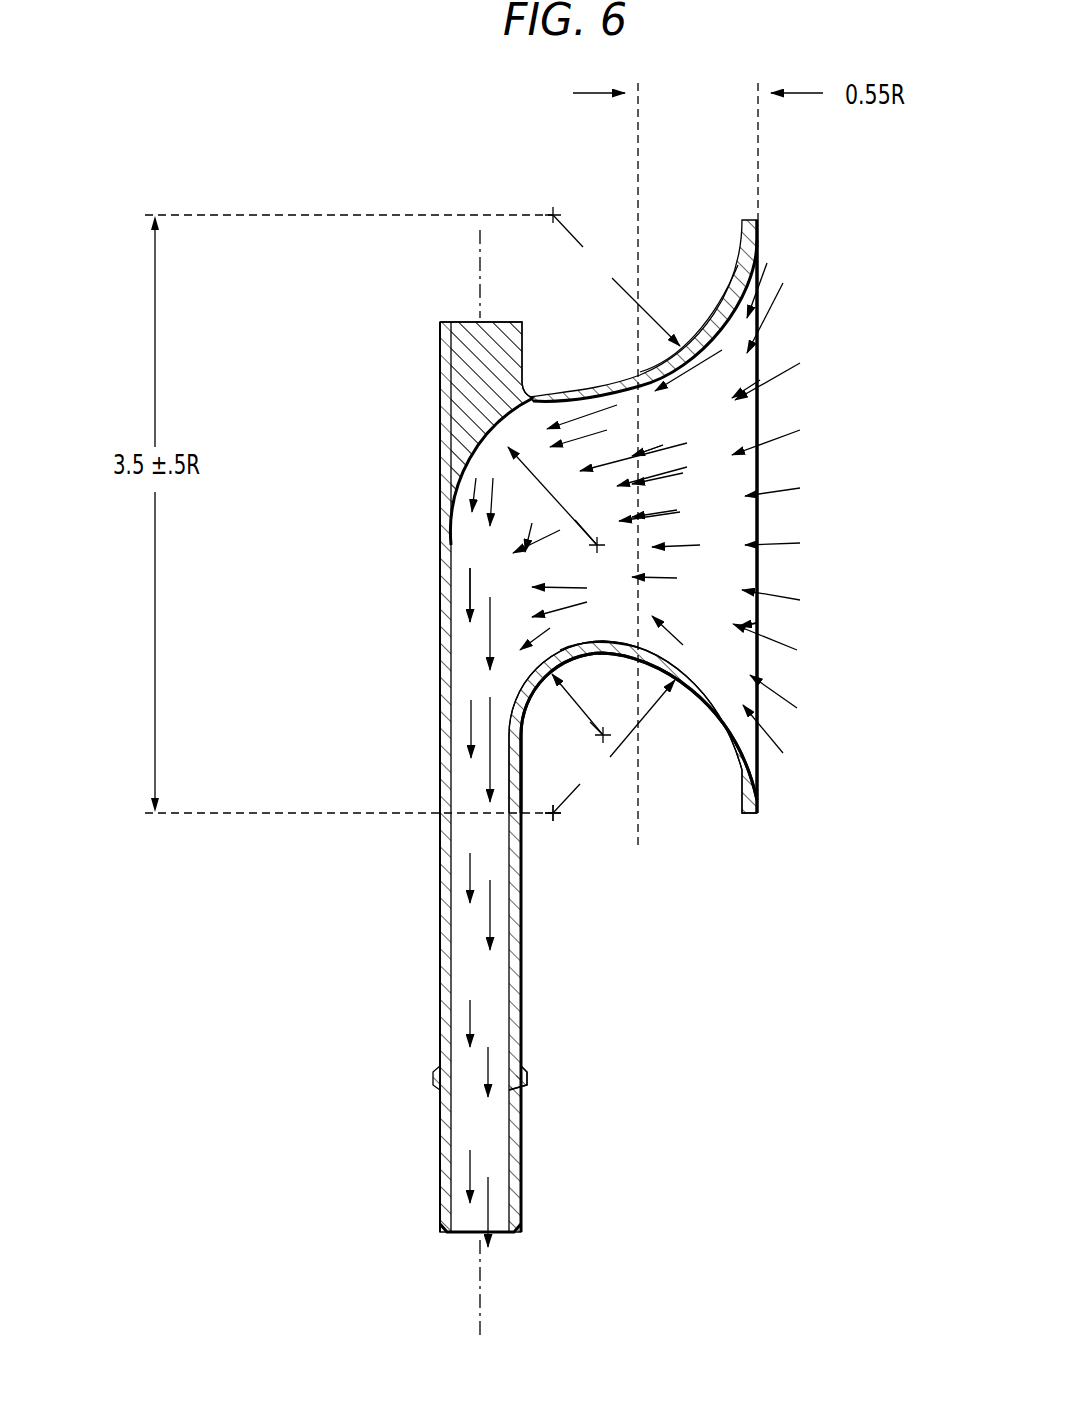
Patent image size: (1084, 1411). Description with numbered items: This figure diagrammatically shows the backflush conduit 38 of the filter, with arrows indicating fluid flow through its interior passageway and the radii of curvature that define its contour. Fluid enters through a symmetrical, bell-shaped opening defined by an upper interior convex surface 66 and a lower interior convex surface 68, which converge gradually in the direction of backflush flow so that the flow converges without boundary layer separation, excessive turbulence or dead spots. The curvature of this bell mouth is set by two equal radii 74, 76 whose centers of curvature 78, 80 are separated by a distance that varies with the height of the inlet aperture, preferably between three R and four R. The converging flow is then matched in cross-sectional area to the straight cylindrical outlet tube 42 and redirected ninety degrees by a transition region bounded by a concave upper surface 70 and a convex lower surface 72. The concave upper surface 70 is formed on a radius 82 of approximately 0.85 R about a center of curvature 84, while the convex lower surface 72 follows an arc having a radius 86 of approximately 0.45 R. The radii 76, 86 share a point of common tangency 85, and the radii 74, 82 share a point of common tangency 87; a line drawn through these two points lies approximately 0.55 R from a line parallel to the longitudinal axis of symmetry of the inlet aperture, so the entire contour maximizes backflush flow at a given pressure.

The backflush conduit 38 is at (306, 612).
The outlet tube 42 is at (455, 937).
The upper interior convex surface 66 is at (773, 300).
The lower interior convex surface 68 is at (728, 720).
The concave upper surface 70 is at (440, 375).
The convex lower surface 72 is at (587, 640).
The radius 74 is at (655, 314).
The radius 76 is at (558, 812).
The center of curvature 78 is at (556, 214).
The center of curvature 80 is at (556, 817).
The radius 82 is at (462, 472).
The center of curvature 84 is at (597, 548).
The point of common tangency 85 is at (660, 647).
The radius 86 is at (598, 728).
The point of common tangency 87 is at (640, 384).